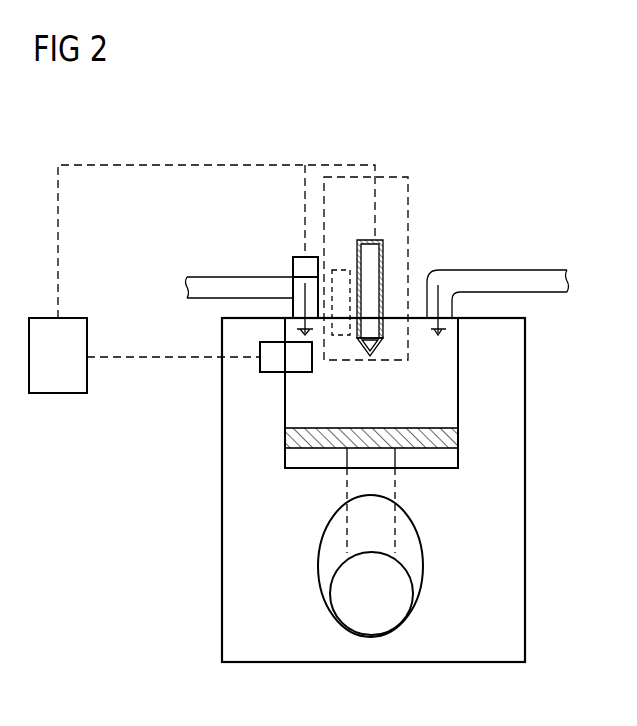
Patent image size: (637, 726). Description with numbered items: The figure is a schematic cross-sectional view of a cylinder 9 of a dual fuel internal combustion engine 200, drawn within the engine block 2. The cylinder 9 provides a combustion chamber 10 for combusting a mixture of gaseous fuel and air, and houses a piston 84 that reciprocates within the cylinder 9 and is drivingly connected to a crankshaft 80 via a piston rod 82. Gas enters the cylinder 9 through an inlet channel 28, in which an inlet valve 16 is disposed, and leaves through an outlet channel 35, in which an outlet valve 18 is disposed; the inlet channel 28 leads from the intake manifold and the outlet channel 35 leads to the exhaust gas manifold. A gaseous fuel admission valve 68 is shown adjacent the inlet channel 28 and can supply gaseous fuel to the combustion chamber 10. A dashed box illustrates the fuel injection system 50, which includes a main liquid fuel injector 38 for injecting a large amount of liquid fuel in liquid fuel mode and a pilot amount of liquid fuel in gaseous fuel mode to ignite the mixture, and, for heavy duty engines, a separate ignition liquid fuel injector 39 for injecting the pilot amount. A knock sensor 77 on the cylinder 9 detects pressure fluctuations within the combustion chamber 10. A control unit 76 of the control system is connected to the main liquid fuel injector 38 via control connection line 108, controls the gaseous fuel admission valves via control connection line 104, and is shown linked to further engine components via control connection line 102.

The DF internal combustion engine 200 is at (362, 108).
The engine block 2 is at (527, 510).
The cylinder 9 is at (458, 384).
The piston 84 is at (460, 438).
The piston rod 82 is at (395, 492).
The crankshaft 80 is at (400, 607).
The control unit 76 is at (57, 393).
The control connection line 102 is at (172, 358).
The knock sensor 77 is at (278, 372).
The control connection line 104 is at (303, 203).
The fuel injection system 50 is at (413, 227).
The control connection line 108 is at (375, 170).
The inlet channel 28 is at (253, 285).
The valve 68 is at (300, 255).
The inlet valve 16 is at (312, 333).
The ignition liquid fuel injector 39 is at (338, 270).
The main liquid fuel injector 38 is at (373, 240).
The outlet channel 35 is at (513, 280).
The outlet valve 18 is at (440, 337).
The combustion chamber 10 is at (363, 422).